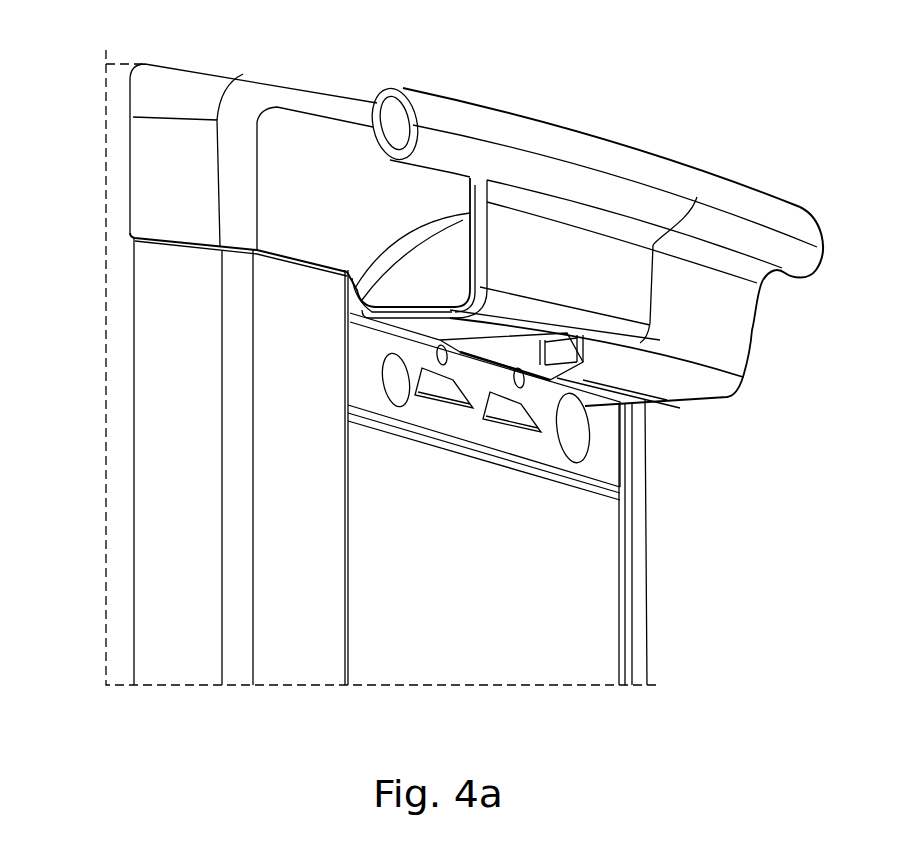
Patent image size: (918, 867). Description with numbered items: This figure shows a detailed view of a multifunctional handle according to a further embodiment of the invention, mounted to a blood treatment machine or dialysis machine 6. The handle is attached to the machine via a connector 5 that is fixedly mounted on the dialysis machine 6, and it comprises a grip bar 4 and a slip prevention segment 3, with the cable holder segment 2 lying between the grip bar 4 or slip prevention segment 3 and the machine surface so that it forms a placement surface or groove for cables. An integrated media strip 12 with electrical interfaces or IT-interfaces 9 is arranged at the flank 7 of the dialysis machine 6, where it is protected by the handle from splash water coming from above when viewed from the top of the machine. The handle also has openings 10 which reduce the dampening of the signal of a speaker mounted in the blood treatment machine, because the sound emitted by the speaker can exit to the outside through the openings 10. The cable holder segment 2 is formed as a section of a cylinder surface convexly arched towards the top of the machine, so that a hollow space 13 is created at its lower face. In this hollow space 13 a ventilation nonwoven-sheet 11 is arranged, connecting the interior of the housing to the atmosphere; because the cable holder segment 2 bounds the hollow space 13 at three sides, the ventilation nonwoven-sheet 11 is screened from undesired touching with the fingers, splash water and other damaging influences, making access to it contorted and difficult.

The cable holder segment 2 is at (410, 290).
The slip prevention segment 3 is at (733, 323).
The grip bar 4 is at (562, 147).
The connector 5 is at (302, 143).
The dialysis machine 6 is at (158, 405).
The flank 7 is at (592, 588).
The electrical interfaces or IT-interfaces 9 is at (393, 397).
The openings 10 is at (450, 393).
The ventilation nonwoven-sheet 11 is at (512, 348).
The media strip 12 is at (607, 445).
The hollow space 13 is at (612, 362).